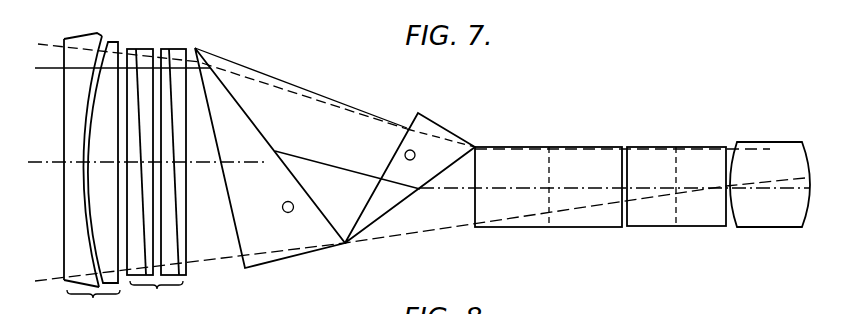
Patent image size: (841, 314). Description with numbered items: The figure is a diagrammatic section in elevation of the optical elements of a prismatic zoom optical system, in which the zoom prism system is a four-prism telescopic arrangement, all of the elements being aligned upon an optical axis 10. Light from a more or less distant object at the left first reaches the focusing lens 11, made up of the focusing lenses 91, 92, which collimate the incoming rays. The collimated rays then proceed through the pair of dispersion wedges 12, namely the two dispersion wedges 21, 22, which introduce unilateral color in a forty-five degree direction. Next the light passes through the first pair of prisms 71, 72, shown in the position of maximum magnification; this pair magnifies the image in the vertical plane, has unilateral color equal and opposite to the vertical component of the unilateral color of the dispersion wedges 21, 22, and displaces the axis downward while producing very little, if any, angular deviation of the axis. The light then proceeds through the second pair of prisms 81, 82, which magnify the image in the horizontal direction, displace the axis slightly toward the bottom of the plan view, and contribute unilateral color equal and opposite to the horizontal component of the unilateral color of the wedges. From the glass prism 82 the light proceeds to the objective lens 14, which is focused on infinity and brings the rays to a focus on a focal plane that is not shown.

The optical axis 10 is at (51, 160).
The focusing lens 11 is at (78, 173).
The pair of dispersion wedges 12 is at (173, 163).
The objective lens 14 is at (755, 142).
The dispersion wedge 21 is at (146, 54).
The dispersion wedge 22 is at (170, 172).
The first prism 71 is at (235, 117).
The second prism 72 is at (405, 140).
The third prism 81 is at (517, 157).
The fourth prism 82 is at (646, 157).
The focusing lens element 91 is at (71, 108).
The focusing lens element 92 is at (95, 172).